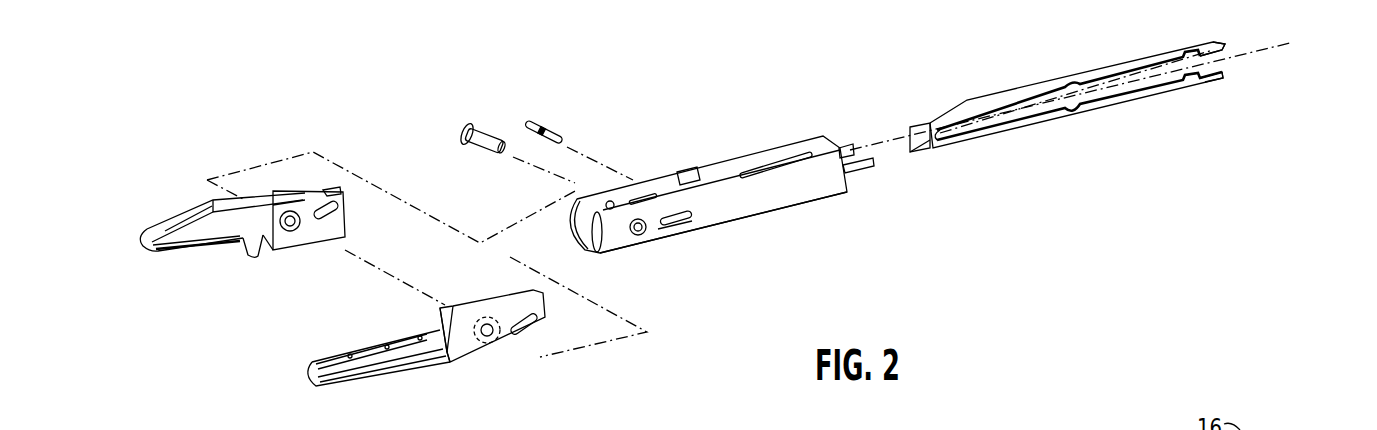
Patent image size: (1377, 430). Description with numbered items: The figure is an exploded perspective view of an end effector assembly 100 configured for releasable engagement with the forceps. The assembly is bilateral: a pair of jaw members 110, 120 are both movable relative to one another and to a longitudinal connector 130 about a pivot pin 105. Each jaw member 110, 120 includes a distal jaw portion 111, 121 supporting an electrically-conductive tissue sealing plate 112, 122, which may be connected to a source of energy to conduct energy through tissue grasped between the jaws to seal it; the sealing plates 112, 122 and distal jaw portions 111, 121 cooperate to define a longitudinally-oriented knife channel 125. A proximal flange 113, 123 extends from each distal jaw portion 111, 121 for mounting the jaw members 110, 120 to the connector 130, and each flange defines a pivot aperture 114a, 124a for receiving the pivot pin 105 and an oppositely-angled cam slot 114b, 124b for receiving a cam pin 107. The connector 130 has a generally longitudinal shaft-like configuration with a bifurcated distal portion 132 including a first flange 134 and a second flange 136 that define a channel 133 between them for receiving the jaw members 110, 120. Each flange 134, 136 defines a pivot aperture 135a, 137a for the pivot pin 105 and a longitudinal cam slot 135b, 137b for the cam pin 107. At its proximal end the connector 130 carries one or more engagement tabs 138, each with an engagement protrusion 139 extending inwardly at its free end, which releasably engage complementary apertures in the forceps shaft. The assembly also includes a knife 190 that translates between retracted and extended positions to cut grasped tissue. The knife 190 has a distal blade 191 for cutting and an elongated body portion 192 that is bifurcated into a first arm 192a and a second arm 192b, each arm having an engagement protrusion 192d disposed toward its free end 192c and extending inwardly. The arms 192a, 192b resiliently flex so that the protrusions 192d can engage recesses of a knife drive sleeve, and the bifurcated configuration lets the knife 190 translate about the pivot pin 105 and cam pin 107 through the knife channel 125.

The end effector assembly 100 is at (258, 138).
The pivot pin 105 is at (478, 148).
The cam pin 107 is at (528, 122).
The jaw member 110 is at (190, 204).
The distal jaw portion 111 is at (212, 200).
The tissue sealing plate 112 is at (180, 255).
The proximal flange 113 is at (287, 195).
The pivot aperture 114a is at (290, 232).
The cam slot 114b is at (330, 190).
The jaw member 120 is at (322, 398).
The distal jaw portion 121 is at (407, 367).
The tissue sealing plate 122 is at (342, 357).
The proximal flange 123 is at (488, 357).
The pivot aperture 124a is at (488, 322).
The cam slot 124b is at (530, 325).
The knife channel 125 is at (398, 332).
The connector 130 is at (772, 148).
The bifurcated distal portion 132 is at (645, 232).
The channel 133 is at (582, 240).
The first flange 134 is at (573, 213).
The pivot aperture 135a is at (603, 203).
The cam slot 135b is at (642, 197).
The second flange 136 is at (613, 253).
The pivot aperture 137a is at (663, 230).
The cam slot 137b is at (692, 215).
The engagement tab 138 is at (845, 150).
The engagement protrusion 139 is at (850, 152).
The knife 190 is at (1110, 46).
The distal blade 191 is at (923, 150).
The body portion 192 is at (977, 107).
The first arm 192a is at (1057, 87).
The second arm 192b is at (1047, 117).
The free end 192c is at (1214, 42).
The engagement protrusion 192d is at (1218, 53).